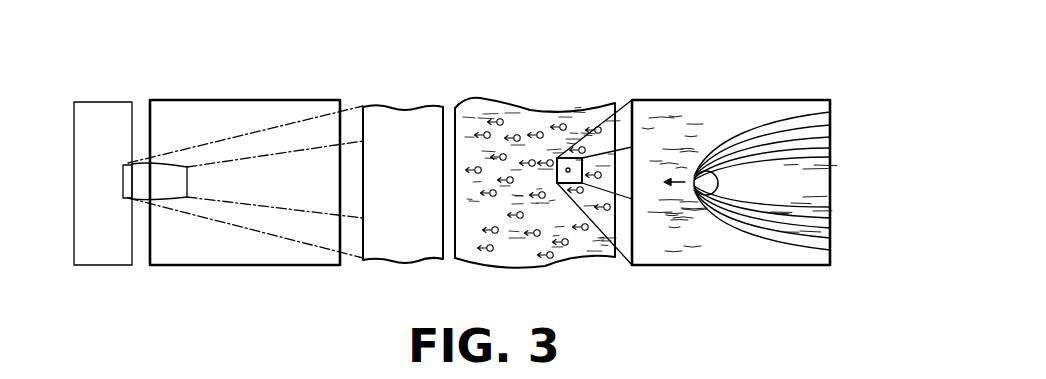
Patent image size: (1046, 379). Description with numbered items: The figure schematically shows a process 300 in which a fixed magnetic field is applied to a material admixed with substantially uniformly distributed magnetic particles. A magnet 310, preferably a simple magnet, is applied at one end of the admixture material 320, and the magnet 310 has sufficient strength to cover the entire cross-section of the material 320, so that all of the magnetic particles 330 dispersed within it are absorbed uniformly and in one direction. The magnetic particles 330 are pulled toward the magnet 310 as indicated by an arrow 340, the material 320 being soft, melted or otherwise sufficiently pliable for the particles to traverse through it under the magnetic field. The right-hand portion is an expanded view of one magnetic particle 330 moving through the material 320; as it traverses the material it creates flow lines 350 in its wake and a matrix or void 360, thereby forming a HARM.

The process 300 is at (355, 302).
The magnet 310 is at (380, 106).
The admixture material 320 is at (497, 100).
The magnetic particles 330 is at (706, 183).
The arrow 340 is at (680, 188).
The flow lines 350 is at (820, 122).
The matrix or void 360 is at (813, 188).